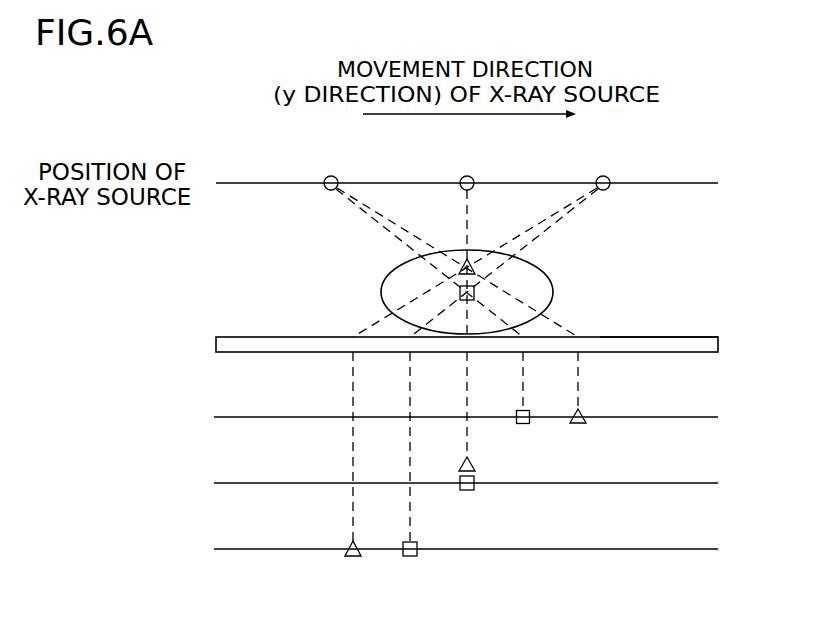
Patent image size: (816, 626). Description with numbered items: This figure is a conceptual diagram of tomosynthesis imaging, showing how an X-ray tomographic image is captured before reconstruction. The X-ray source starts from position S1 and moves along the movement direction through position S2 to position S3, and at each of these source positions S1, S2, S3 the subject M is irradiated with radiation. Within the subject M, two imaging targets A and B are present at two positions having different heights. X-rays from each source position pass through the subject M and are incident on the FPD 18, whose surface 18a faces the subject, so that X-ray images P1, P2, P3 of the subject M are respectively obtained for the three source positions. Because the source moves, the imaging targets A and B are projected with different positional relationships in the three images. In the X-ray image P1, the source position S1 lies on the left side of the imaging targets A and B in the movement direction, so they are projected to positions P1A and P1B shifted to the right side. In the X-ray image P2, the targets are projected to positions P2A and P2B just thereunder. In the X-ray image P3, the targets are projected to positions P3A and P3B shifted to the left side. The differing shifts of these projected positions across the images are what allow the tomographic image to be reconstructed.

The FPD 18 is at (215, 343).
The surface of the FPD 18a is at (667, 337).
The position S1 of the X-ray source S1 is at (332, 171).
The position S2 of the X-ray source S2 is at (468, 171).
The position S3 of the X-ray source S3 is at (604, 171).
The subject M is at (392, 270).
The imaging target A is at (474, 270).
The imaging target B is at (476, 293).
The X-ray image P1 is at (484, 419).
The X-ray image P2 is at (484, 484).
The X-ray image P3 is at (484, 550).
The projected position P1A is at (579, 429).
The projected position P1B is at (523, 431).
The projected position P2A is at (466, 487).
The projected position P2B is at (466, 506).
The projected position P3A is at (354, 561).
The projected position P3B is at (412, 562).